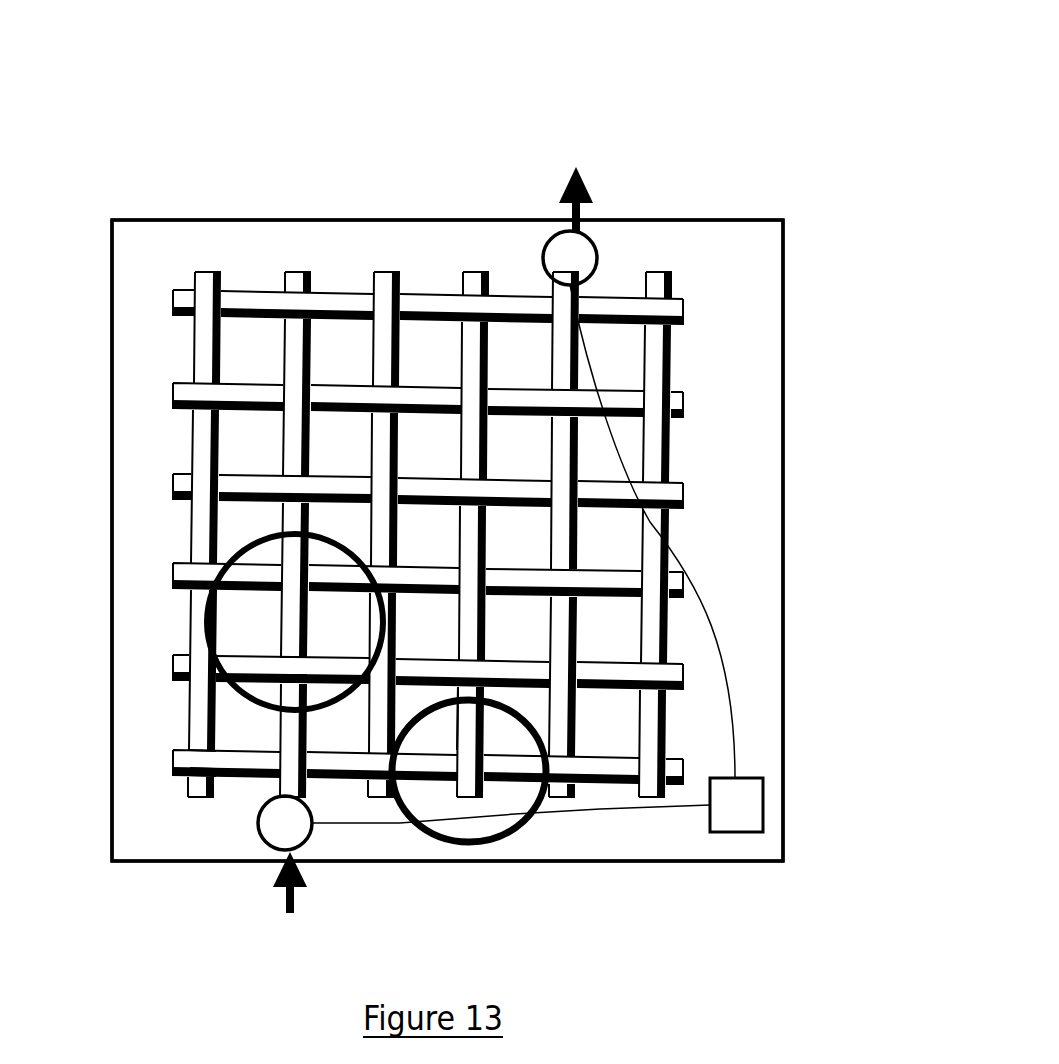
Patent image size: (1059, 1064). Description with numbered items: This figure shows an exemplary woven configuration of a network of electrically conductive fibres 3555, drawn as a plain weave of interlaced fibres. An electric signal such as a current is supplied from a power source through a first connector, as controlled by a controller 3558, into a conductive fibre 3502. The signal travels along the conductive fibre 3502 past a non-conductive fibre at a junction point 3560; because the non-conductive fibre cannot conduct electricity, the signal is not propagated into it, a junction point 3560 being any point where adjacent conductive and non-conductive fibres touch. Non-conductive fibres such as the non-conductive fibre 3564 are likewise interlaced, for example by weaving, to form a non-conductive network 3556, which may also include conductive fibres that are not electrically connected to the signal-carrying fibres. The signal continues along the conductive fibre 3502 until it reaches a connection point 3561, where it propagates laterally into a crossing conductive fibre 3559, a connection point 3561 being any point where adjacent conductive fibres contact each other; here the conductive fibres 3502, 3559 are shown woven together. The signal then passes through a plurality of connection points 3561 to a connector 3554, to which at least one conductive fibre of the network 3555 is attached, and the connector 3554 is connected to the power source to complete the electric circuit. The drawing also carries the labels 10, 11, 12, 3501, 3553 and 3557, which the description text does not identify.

The filter apparatus 10 is at (762, 214).
The filter device 11 is at (762, 214).
The filter mesh 12 is at (430, 343).
The first wire 3501 is at (238, 755).
The conductive fibre 3502 is at (260, 777).
The inlet 3553 is at (265, 845).
The connector 3554 is at (598, 257).
The network of electrically conductive fibres 3555 is at (228, 556).
The non-conductive network 3556 is at (470, 843).
The housing 3557 is at (785, 468).
The controller 3558 is at (763, 808).
The conductive fibre 3559 is at (237, 667).
The junction point 3560 is at (290, 752).
The connection point 3561 is at (290, 668).
The non-conductive fibre 3564 is at (468, 725).